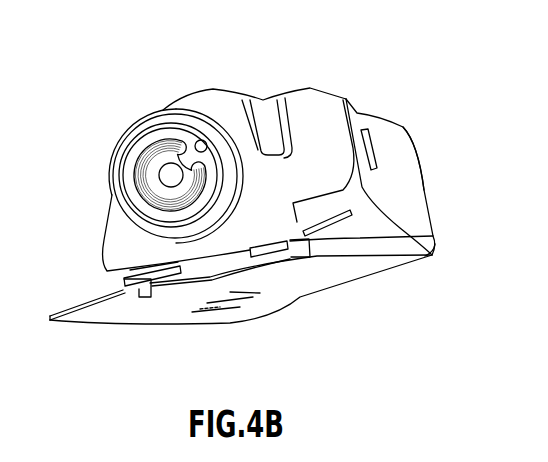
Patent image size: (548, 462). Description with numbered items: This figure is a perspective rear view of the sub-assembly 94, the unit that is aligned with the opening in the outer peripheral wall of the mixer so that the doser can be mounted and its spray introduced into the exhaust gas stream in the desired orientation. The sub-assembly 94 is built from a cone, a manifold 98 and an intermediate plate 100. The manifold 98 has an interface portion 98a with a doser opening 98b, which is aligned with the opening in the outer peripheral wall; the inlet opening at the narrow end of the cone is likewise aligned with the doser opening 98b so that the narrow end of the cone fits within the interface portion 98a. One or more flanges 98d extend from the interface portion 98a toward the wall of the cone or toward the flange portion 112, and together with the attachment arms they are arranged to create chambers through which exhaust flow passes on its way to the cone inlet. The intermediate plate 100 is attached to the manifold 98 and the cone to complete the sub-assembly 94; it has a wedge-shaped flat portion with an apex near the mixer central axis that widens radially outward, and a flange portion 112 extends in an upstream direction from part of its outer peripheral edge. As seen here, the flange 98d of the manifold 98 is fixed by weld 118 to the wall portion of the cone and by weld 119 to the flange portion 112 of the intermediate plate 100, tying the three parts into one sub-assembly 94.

The sub-assembly 94 is at (443, 86).
The manifold 98 is at (233, 97).
The interface portion 98a is at (140, 143).
The doser opening 98b is at (168, 175).
The flange 98d is at (125, 283).
The intermediate plate 100 is at (150, 316).
The flange portion 112 is at (408, 161).
The weld 118 is at (164, 295).
The weld 119 is at (393, 168).